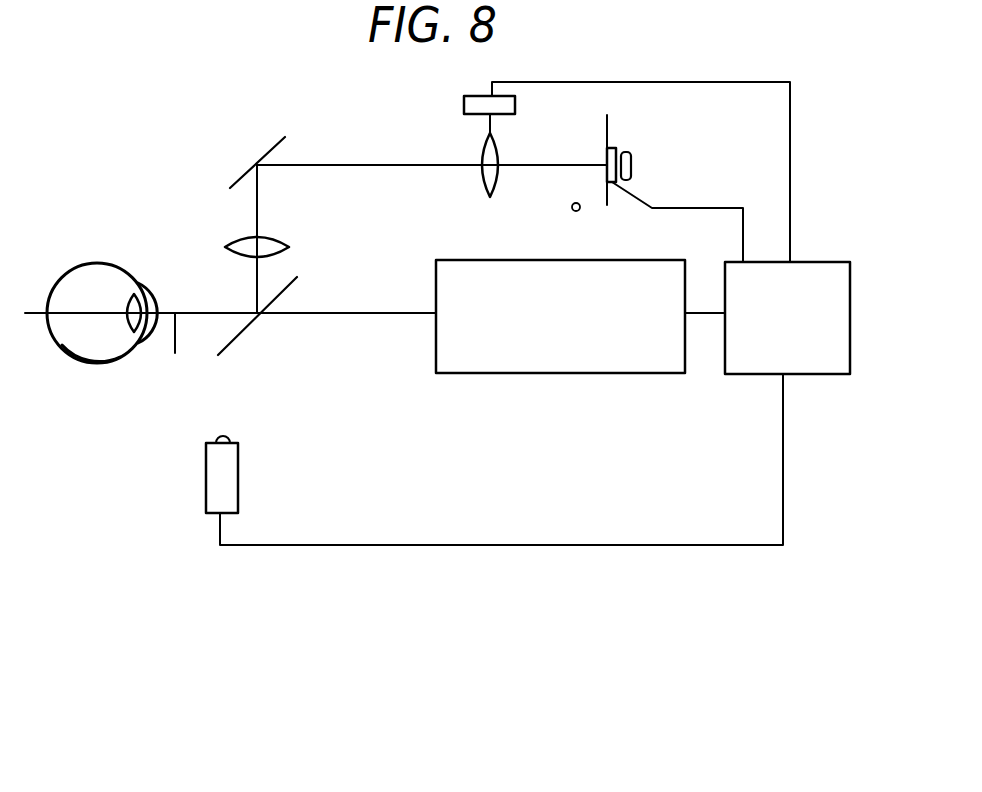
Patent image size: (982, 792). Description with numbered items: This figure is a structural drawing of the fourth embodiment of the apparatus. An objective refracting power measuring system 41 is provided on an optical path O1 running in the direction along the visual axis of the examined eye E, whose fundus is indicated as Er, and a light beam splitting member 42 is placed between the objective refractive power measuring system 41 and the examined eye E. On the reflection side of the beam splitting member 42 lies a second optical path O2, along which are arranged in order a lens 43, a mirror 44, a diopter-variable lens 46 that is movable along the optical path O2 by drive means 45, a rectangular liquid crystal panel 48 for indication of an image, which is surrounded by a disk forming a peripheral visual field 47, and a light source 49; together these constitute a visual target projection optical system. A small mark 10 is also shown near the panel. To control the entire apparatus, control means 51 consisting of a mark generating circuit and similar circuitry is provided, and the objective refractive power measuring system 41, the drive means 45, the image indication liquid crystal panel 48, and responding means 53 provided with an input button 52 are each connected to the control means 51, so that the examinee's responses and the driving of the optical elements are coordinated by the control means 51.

The examined eye E is at (81, 263).
The fundus (retina) of the eye Er is at (90, 363).
The optical path O1 is at (178, 349).
The optical path O2 is at (259, 200).
The index (fixation target mark) 10 is at (570, 208).
The objective refracting power measuring system 41 is at (660, 260).
The light beam splitting member 42 is at (247, 330).
The lens 43 is at (228, 245).
The mirror 44 is at (267, 153).
The drive means 45 is at (464, 103).
The diopter-variable lens 46 is at (481, 158).
The peripheral visual field 47 is at (604, 130).
The liquid crystal panel 48 is at (610, 147).
The light source 49 is at (632, 162).
The control means 51 is at (826, 262).
The input button 52 is at (230, 438).
The responding means 53 is at (206, 470).